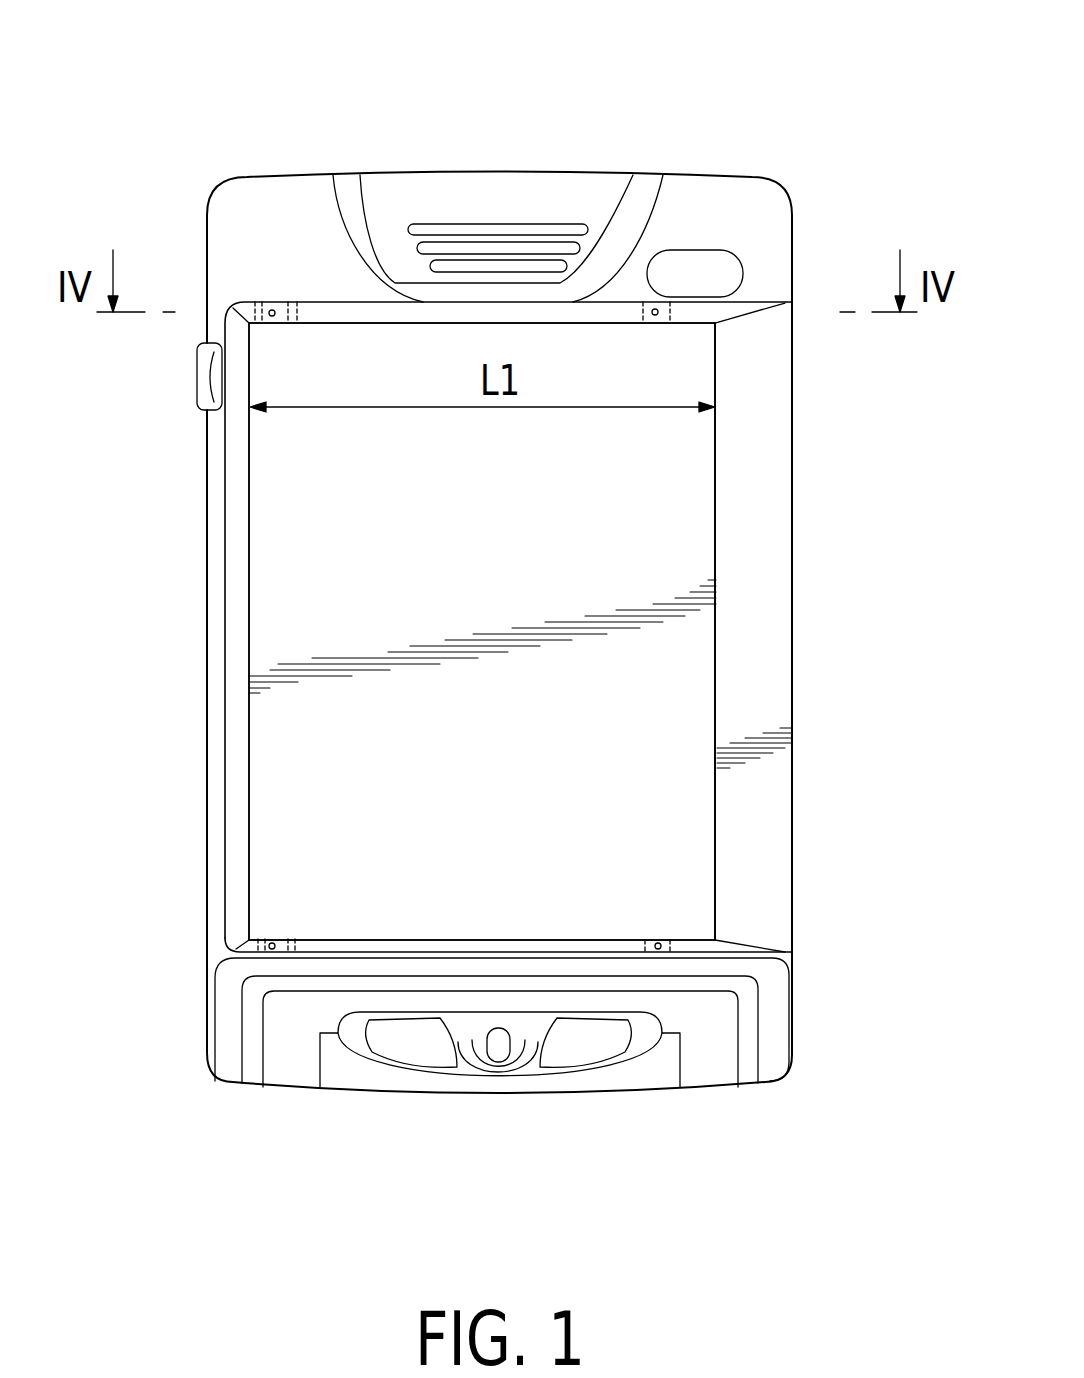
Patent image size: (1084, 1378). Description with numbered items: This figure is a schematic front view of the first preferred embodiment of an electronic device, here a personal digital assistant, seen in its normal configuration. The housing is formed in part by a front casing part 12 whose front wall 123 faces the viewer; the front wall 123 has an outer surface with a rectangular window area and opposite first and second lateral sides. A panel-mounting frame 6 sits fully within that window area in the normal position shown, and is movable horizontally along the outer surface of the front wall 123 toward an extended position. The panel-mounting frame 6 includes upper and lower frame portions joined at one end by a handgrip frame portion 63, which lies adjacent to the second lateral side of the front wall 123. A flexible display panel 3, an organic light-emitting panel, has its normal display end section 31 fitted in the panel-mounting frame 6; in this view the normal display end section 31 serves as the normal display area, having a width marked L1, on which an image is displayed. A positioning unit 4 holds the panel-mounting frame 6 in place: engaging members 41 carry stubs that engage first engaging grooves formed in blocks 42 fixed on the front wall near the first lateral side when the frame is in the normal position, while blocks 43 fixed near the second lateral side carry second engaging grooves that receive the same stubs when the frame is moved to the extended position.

The front casing part 12 is at (350, 174).
The front wall 123 is at (690, 195).
The flexible display panel 3 is at (406, 631).
The normal display end section 31 is at (322, 568).
The positioning unit 4 is at (476, 650).
The engaging member 41 is at (288, 297).
The block 42 is at (268, 300).
The block 43 is at (677, 323).
The panel-mounting frame 6 is at (561, 627).
The handgrip frame portion 63 is at (757, 603).